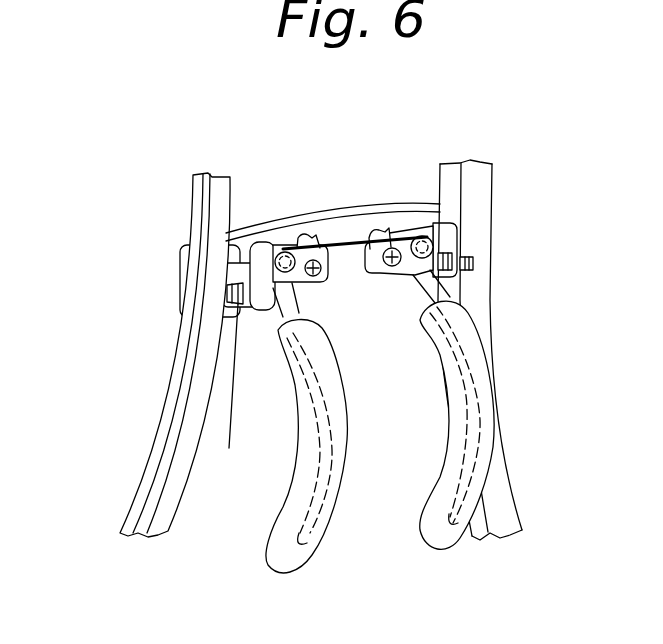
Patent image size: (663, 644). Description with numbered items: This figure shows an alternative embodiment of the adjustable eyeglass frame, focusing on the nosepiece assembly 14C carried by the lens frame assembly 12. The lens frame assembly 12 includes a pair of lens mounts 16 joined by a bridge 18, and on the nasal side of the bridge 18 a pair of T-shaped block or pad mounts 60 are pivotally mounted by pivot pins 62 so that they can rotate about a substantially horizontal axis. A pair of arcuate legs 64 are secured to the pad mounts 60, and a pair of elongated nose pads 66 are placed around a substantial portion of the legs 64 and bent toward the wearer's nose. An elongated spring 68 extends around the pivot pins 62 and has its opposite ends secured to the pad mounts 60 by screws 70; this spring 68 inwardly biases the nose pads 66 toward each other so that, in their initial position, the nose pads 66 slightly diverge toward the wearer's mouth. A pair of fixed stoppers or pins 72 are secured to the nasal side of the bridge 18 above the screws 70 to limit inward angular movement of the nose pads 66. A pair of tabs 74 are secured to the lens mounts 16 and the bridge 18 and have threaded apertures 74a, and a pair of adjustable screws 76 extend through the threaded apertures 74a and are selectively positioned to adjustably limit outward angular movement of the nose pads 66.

The lens frame assembly 12 is at (128, 369).
The nosepiece assembly 14C is at (371, 542).
The lens mounts 16 is at (197, 213).
The bridge 18 is at (340, 208).
The pad mounts 60 is at (254, 247).
The pivot pins 62 is at (282, 245).
The arcuate legs 64 is at (283, 316).
The nose pads 66 is at (333, 482).
The spring 68 is at (352, 275).
The screws 70 is at (318, 278).
The stoppers 72 is at (306, 236).
The tabs 74 is at (222, 262).
The threaded apertures 74a is at (234, 396).
The adjustable screws 76 is at (230, 288).